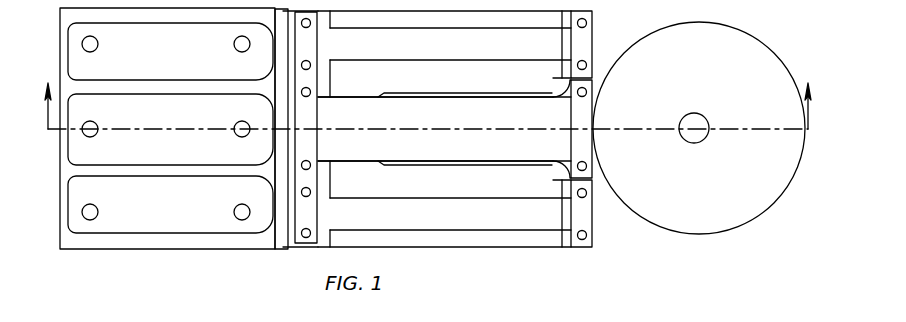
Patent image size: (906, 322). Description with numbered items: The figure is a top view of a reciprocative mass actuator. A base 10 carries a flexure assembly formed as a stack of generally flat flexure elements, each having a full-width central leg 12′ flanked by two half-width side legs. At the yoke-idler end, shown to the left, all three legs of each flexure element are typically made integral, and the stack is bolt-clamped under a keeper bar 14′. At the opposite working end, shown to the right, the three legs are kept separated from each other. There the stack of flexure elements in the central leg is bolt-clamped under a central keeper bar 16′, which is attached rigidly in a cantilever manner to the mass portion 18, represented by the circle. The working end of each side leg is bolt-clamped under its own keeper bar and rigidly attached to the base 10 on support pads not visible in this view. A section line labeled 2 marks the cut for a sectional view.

The housing / base plate 10 is at (165, 243).
The center bar 12′ is at (440, 139).
The mounting plate 14′ is at (302, 213).
The center end plate 16′ is at (578, 125).
The disk 18 is at (744, 104).
The section line 2- 2 is at (428, 91).